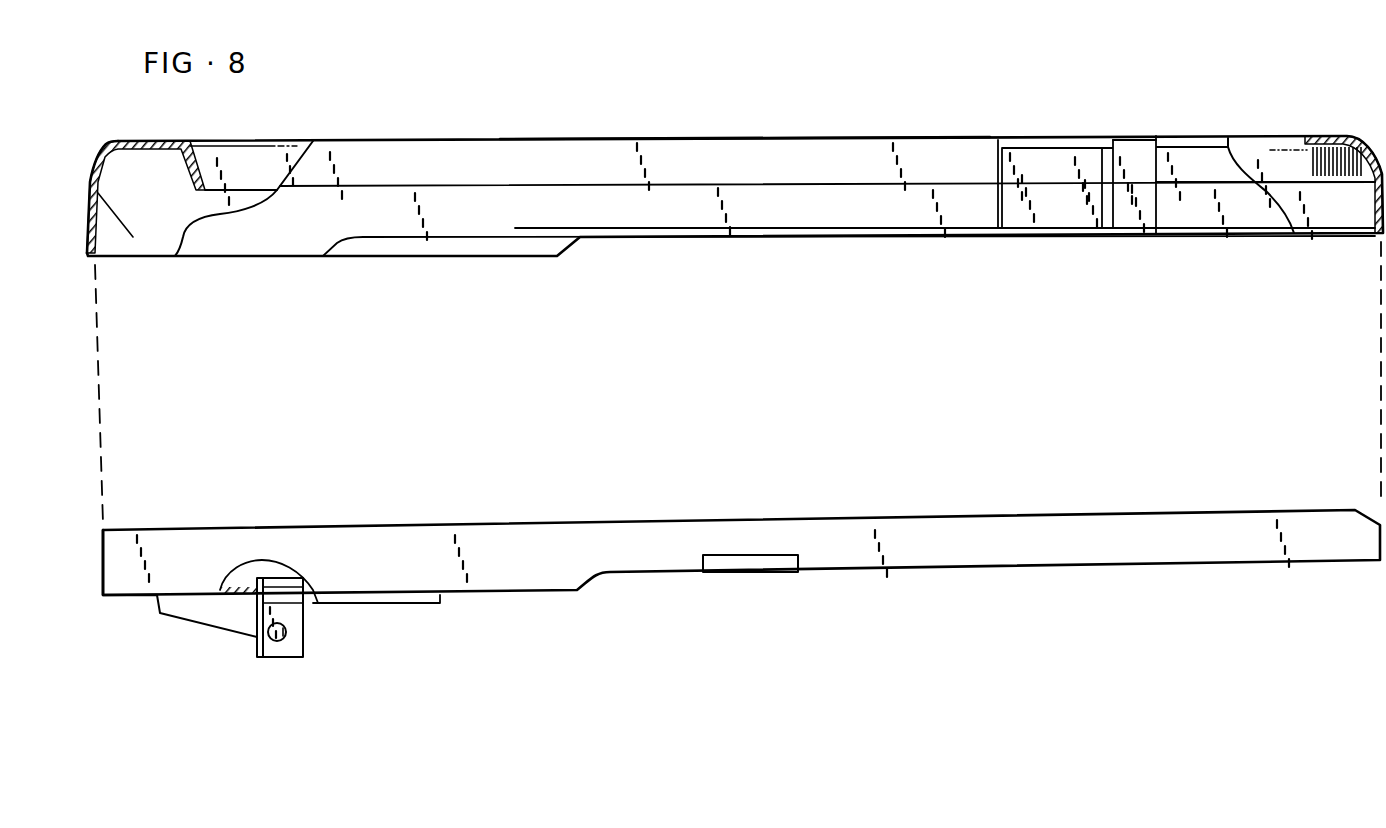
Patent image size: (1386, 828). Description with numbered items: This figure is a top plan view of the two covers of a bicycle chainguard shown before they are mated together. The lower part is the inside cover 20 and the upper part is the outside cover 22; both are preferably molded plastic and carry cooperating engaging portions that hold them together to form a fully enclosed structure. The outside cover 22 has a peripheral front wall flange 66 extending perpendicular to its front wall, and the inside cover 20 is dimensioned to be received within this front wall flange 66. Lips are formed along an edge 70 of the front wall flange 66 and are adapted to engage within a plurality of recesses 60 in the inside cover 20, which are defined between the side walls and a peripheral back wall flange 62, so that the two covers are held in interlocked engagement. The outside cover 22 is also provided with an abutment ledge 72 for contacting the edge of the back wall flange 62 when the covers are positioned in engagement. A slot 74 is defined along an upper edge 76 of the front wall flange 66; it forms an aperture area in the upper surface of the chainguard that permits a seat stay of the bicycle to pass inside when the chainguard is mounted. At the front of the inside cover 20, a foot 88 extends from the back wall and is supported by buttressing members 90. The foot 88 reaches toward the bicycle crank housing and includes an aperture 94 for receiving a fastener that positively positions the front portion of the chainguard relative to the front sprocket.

The inside cover 20 is at (626, 576).
The outside cover 22 is at (493, 138).
The recesses 60 is at (732, 567).
The back wall flange 62 is at (97, 580).
The front wall flange 66 is at (88, 208).
The edge 70 is at (1170, 237).
The abutment ledge 72 is at (128, 236).
The slot 74 is at (1127, 157).
The upper edge 76 is at (803, 148).
The foot 88 is at (280, 652).
The buttressing members 90 is at (228, 618).
The aperture 94 is at (280, 632).